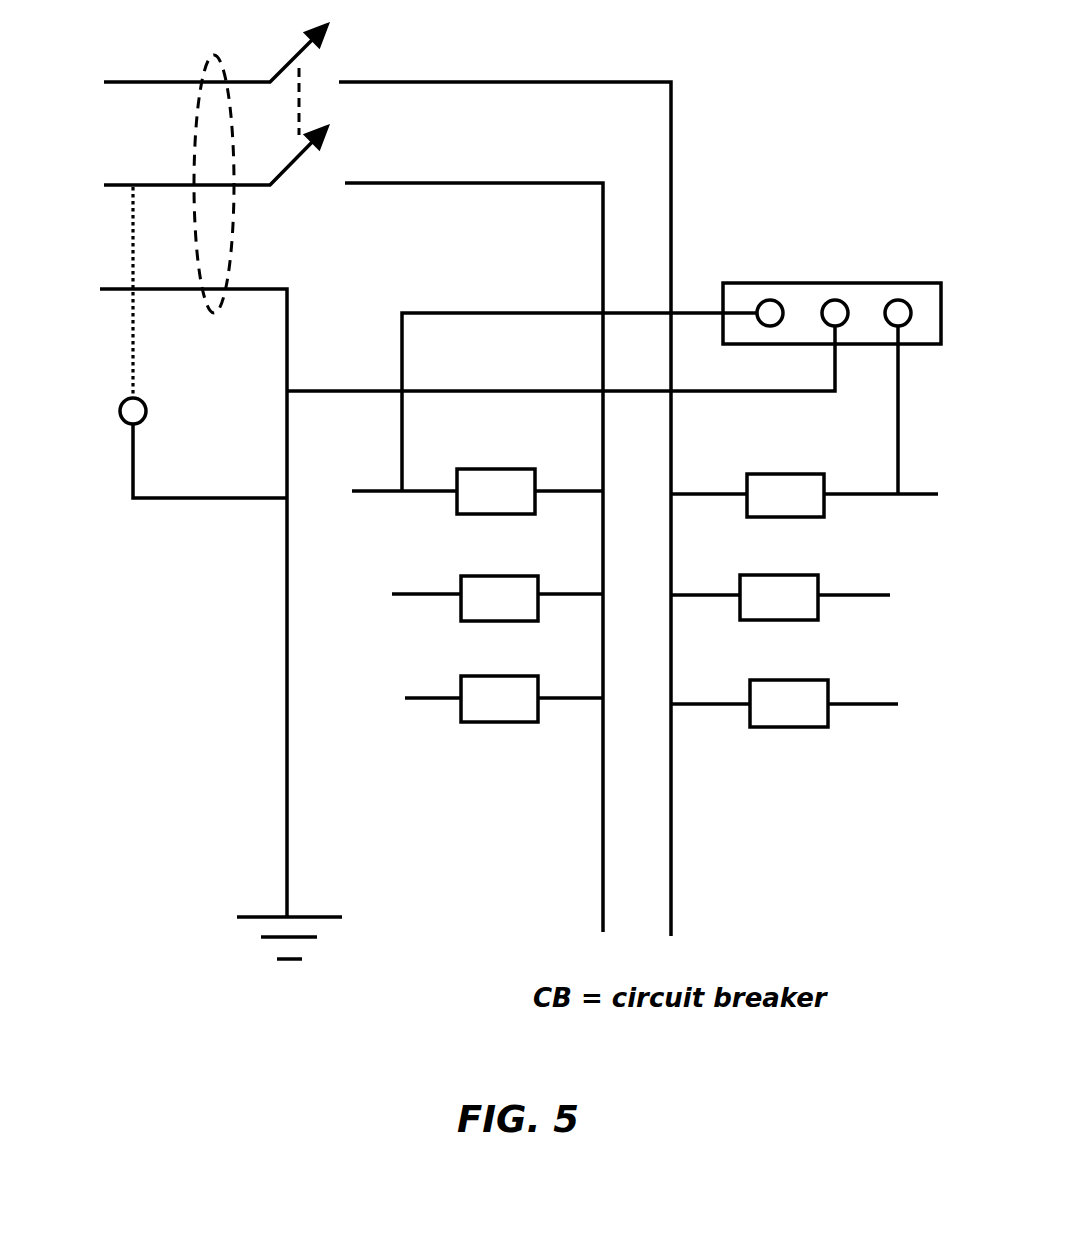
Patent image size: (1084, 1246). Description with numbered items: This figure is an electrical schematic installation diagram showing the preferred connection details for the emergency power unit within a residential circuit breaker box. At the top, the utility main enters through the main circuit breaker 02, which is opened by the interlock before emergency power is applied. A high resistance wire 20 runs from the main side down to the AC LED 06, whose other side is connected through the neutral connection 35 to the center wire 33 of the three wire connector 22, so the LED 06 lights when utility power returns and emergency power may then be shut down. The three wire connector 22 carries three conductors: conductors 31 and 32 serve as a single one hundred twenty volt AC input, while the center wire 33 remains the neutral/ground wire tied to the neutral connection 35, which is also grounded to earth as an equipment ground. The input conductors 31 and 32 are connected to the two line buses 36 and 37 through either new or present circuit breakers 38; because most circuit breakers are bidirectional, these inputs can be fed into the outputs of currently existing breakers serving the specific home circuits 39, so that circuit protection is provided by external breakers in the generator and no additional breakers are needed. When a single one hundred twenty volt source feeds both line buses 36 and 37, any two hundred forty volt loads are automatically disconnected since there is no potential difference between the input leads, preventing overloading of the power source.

The main circuit breaker 02 is at (215, 167).
The high resistance wire 20 is at (133, 328).
The LED 06 is at (146, 412).
The three wire connector 22 is at (901, 283).
The conductor 31 is at (770, 300).
The conductor 32 is at (908, 322).
The center wire 33 is at (833, 300).
The neutral connection 35 is at (287, 778).
The line bus 36 is at (603, 888).
The line bus 37 is at (672, 900).
The circuit breaker 38 is at (786, 727).
The home circuits 39 is at (413, 698).